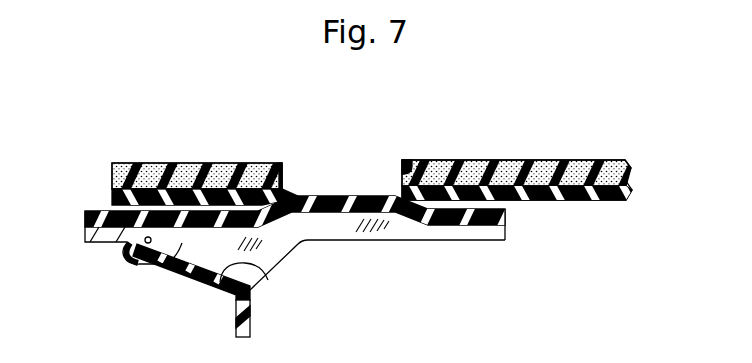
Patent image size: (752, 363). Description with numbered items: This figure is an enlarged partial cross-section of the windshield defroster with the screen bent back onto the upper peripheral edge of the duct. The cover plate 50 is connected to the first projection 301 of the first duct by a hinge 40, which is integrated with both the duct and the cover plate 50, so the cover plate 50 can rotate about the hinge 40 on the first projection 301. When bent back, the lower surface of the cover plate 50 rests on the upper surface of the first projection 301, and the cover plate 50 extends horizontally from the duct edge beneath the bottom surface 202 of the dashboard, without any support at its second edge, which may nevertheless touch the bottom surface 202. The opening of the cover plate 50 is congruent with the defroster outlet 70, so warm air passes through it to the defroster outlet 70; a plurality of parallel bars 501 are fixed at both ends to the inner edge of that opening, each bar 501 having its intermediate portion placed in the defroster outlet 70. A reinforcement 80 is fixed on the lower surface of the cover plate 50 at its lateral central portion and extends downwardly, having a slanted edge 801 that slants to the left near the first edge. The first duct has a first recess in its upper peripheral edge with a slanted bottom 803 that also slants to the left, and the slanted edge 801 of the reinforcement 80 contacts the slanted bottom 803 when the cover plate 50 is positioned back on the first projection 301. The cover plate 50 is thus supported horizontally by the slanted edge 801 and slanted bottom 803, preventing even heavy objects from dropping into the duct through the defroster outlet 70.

The hinge 40 is at (83, 229).
The first projection 301 is at (98, 234).
The bar 501 is at (333, 194).
The cover plate 50 is at (512, 222).
The defroster outlet 70 is at (402, 173).
The bottom surface 202 is at (592, 195).
The reinforcement 80 is at (414, 247).
The slanted edge 801 is at (171, 263).
The slanted bottom 803 is at (258, 270).